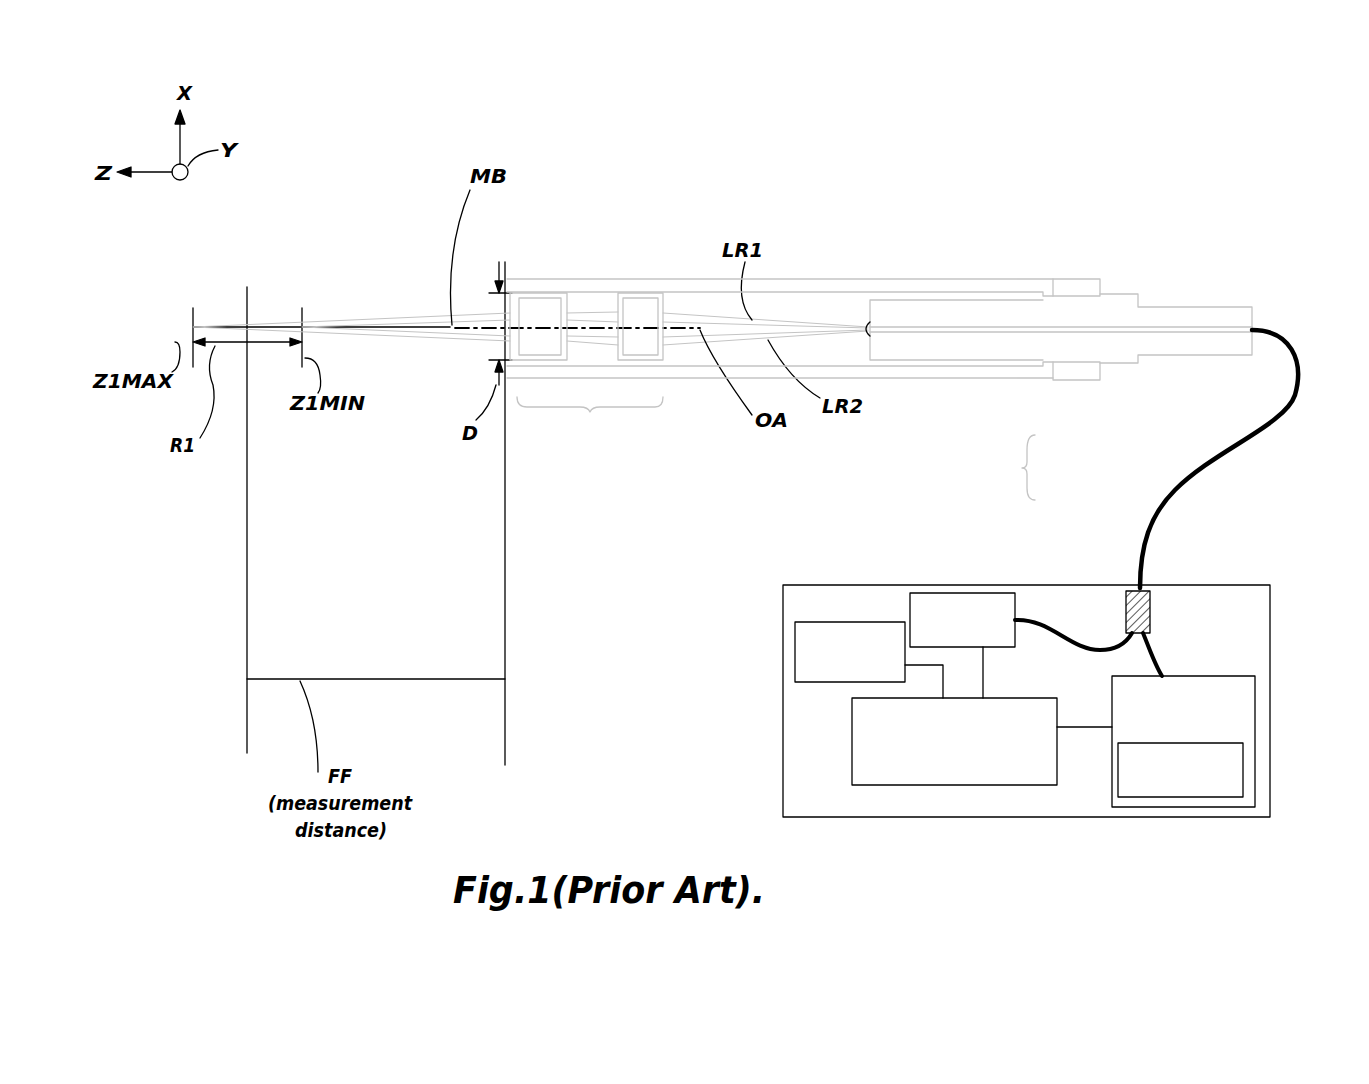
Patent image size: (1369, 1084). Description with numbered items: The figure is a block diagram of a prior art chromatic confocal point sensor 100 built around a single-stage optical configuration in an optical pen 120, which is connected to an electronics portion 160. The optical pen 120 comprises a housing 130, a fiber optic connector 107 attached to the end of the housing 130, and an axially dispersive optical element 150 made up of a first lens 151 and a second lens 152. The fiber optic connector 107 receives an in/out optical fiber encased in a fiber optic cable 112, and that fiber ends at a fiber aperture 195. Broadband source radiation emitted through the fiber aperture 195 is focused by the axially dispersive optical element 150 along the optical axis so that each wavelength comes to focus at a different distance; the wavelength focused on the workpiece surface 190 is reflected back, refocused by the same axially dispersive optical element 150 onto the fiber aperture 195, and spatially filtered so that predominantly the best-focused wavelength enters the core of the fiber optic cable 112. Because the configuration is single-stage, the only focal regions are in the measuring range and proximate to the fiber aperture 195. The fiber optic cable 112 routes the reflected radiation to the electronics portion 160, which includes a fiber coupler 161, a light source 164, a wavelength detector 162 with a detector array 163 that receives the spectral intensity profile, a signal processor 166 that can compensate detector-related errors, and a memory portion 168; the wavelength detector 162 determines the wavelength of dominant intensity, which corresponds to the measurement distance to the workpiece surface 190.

The chromatic confocal point sensor 100 is at (1004, 467).
The fiber optic connector 107 is at (1132, 290).
The fiber optic cable 112 is at (1262, 328).
The optical pen 120 is at (1110, 405).
The housing 130 is at (985, 279).
The axially dispersive optical element 150 is at (590, 418).
The first lens 151 is at (640, 293).
The second lens 152 is at (540, 293).
The electronics portion 160 is at (1085, 585).
The fiber coupler 161 is at (1152, 603).
The wavelength detector 162 is at (1235, 676).
The detector array 163 is at (1140, 797).
The light source 164 is at (1015, 603).
The signal processor 166 is at (1050, 698).
The memory portion 168 is at (858, 622).
The workpiece surface 190 is at (245, 582).
The fiber aperture 195 is at (865, 326).